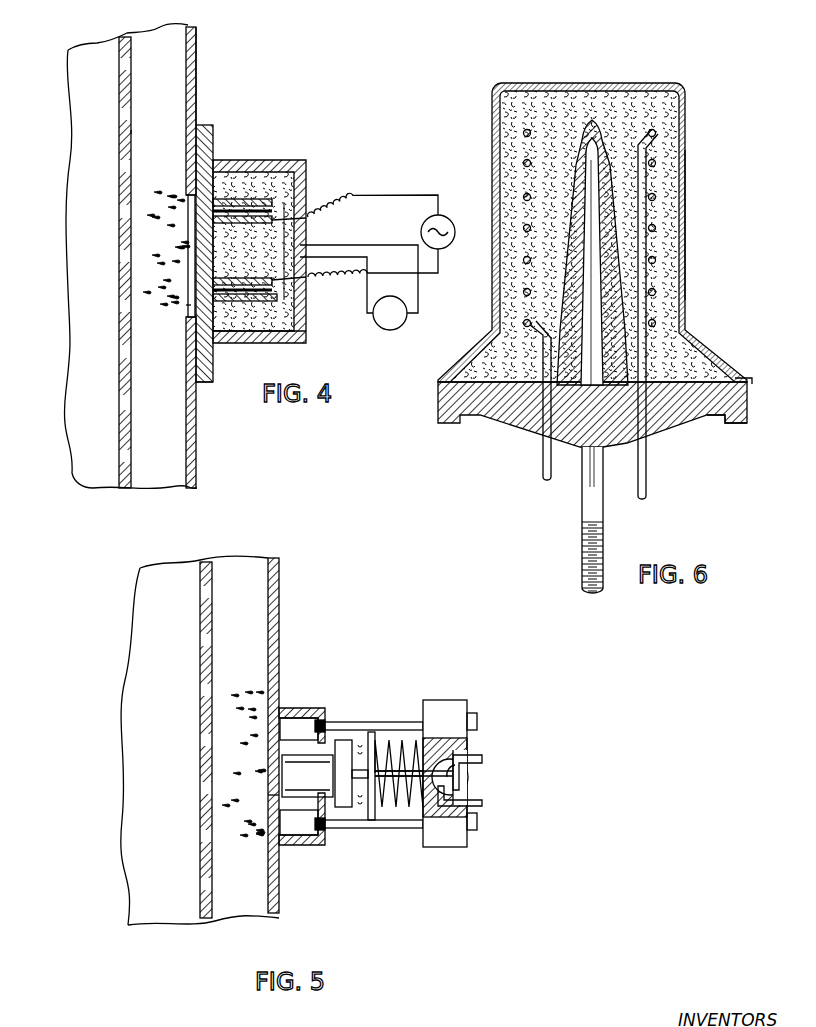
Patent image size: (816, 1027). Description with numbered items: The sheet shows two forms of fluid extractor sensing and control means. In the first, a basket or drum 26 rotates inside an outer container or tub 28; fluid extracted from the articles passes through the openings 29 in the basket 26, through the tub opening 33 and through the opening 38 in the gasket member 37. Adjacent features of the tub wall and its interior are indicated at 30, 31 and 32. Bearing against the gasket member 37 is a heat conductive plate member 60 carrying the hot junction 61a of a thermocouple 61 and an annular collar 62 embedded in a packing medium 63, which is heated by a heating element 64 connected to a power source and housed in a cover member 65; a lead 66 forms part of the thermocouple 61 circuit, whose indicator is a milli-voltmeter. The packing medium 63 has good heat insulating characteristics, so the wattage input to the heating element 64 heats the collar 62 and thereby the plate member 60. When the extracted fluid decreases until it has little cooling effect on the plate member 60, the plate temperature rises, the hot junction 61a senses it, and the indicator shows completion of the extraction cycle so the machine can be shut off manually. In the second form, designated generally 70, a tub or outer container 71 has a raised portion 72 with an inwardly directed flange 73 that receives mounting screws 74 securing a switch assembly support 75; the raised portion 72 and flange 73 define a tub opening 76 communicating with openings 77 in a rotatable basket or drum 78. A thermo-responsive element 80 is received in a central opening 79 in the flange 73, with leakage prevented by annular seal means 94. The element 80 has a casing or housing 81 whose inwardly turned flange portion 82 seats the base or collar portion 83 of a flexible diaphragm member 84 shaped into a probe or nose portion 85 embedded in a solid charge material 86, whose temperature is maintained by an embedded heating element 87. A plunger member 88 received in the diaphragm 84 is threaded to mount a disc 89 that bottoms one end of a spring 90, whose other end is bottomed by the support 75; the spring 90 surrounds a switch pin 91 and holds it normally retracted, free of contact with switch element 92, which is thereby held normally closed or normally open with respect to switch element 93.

In FIG. 4, the basket or drum 26 is at (68, 292).
In FIG. 4, the outer container or tub 28 is at (197, 72).
In FIG. 4, the openings 29 is at (130, 42).
In FIG. 4, the flow passage 30 is at (131, 132).
In FIG. 4, the outer surface of pipe wall 31 is at (198, 110).
In FIG. 4, the upper pipe portion 32 is at (163, 50).
In FIG. 4, the opening 33 is at (190, 305).
In FIG. 4, the gasket member 37 is at (205, 385).
In FIG. 4, the opening 38 is at (191, 207).
In FIG. 4, the heat conductive plate member 60 is at (214, 147).
In FIG. 4, the thermocouple 61 is at (368, 246).
In FIG. 4, the hot junction 61a is at (188, 250).
In FIG. 4, the annular collar 62 is at (272, 205).
In FIG. 4, the packing medium 63 is at (307, 338).
In FIG. 4, the heating element 64 is at (278, 290).
In FIG. 4, the cover member 65 is at (307, 175).
In FIG. 4, the lead wire 66 is at (305, 246).
In FIG. 5, the fluid extractor control device 70 is at (367, 722).
In FIG. 5, the tub or outer container 71 is at (280, 642).
In FIG. 5, the raised portion 72 is at (302, 708).
In FIG. 5, the inwardly directed flange 73 is at (318, 810).
In FIG. 5, the mounting screws 74 is at (375, 815).
In FIG. 5, the switch assembly support 75 is at (442, 708).
In FIG. 5, the tub opening 76 is at (268, 823).
In FIG. 5, the openings 77 is at (213, 642).
In FIG. 5, the rotatable basket or drum 78 is at (127, 818).
In FIG. 5, the central opening 79 is at (318, 758).
In FIG. 6, the thermo-responsive element 80 is at (688, 126).
In FIG. 5, the thermo-responsive element 80 is at (268, 795).
In FIG. 6, the casing or housing 81 is at (688, 208).
In FIG. 6, the inwardly turned flange portion 82 is at (728, 425).
In FIG. 6, the base or collar portion 83 is at (748, 380).
In FIG. 6, the flexible diaphragm member 84 is at (510, 418).
In FIG. 6, the probe or nose portion 85 is at (596, 124).
In FIG. 6, the solid charge material 86 is at (672, 268).
In FIG. 6, the heating element 87 is at (647, 464).
In FIG. 6, the plunger member 88 is at (585, 505).
In FIG. 5, the disc 89 is at (380, 740).
In FIG. 5, the spring 90 is at (400, 790).
In FIG. 5, the switch pin 91 is at (457, 758).
In FIG. 5, the switch element 92 is at (483, 758).
In FIG. 5, the switch element 93 is at (483, 803).
In FIG. 5, the annular seal means 94 is at (338, 805).